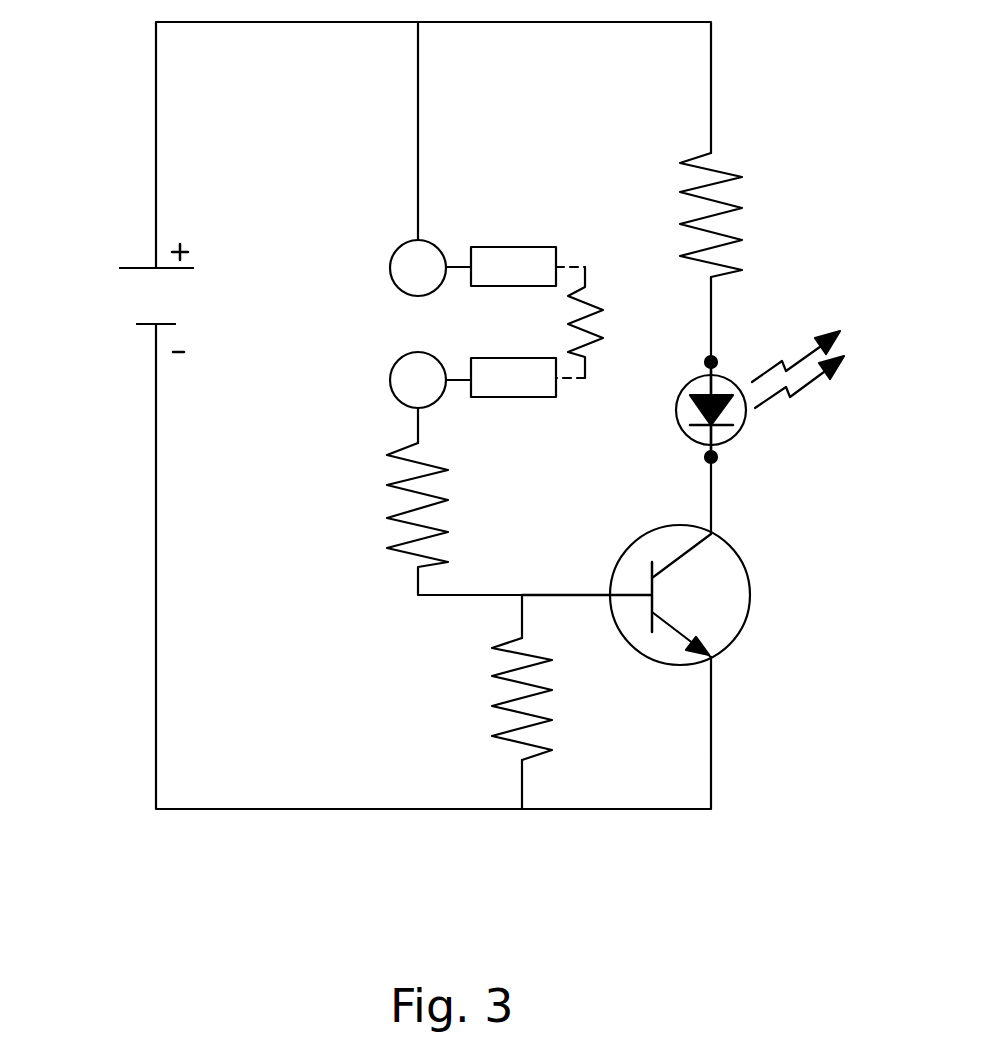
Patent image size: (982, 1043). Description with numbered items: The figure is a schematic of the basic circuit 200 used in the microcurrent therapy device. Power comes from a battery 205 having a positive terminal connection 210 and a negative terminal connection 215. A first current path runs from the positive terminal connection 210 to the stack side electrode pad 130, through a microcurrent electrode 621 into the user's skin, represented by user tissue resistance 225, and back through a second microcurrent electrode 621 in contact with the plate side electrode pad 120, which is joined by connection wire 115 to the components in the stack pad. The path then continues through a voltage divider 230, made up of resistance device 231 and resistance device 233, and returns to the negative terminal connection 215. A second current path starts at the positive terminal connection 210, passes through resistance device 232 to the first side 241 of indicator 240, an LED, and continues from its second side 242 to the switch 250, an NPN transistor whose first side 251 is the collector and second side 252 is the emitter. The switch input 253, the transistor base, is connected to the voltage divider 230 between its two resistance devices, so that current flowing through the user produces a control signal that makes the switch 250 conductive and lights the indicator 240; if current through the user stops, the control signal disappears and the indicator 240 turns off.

The circuit 200 is at (722, 822).
The battery 205 is at (110, 225).
The positive terminal connection 210 is at (193, 268).
The negative terminal connection 215 is at (175, 324).
The connection wire 115 is at (420, 420).
The plate side electrode pad 120 is at (402, 402).
The stack side electrode pad 130 is at (440, 250).
The microcurrent electrode 621 is at (500, 358).
The user tissue resistance 225 is at (602, 345).
The voltage divider 230 is at (450, 601).
The resistance device 231 is at (448, 505).
The resistance device 232 is at (725, 170).
The resistance device 233 is at (560, 733).
The indicator 240 is at (770, 399).
The first side of indicator 241 is at (705, 365).
The second side of indicator 242 is at (711, 457).
The switch 250 is at (698, 597).
The first side of switch 251 is at (711, 543).
The second side of switch 252 is at (709, 649).
The switch input 253 is at (587, 597).